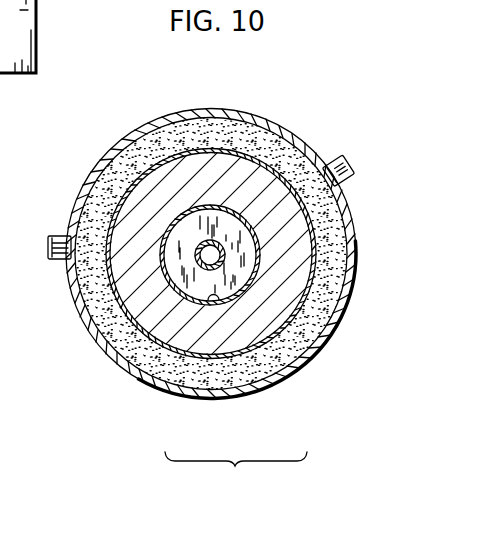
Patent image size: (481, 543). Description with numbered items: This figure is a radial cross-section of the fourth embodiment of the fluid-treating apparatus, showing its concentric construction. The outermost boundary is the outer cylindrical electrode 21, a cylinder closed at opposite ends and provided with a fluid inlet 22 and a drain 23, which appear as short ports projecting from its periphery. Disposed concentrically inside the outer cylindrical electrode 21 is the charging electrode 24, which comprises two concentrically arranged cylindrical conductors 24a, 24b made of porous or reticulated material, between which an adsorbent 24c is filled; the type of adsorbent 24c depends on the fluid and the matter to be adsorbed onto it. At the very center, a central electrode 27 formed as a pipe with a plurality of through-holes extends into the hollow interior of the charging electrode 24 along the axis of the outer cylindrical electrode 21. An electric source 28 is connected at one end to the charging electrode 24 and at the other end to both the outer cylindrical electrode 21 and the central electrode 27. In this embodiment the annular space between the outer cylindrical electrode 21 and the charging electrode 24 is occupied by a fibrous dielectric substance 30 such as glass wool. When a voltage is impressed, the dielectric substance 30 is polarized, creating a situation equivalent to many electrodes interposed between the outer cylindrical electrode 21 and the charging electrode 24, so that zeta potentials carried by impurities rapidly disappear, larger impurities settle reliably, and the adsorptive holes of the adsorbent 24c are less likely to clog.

The outer cylindrical electrode 21 is at (217, 110).
The fluid inlet 22 is at (47, 252).
The drain 23 is at (335, 158).
The charging electrode 24 is at (236, 475).
The cylindrical conductor 24a is at (267, 349).
The cylindrical conductor 24b is at (213, 299).
The adsorbent 24c is at (189, 336).
The central electrode 27 is at (200, 244).
The electric source 28 is at (37, 38).
The dielectric substance 30 is at (132, 378).